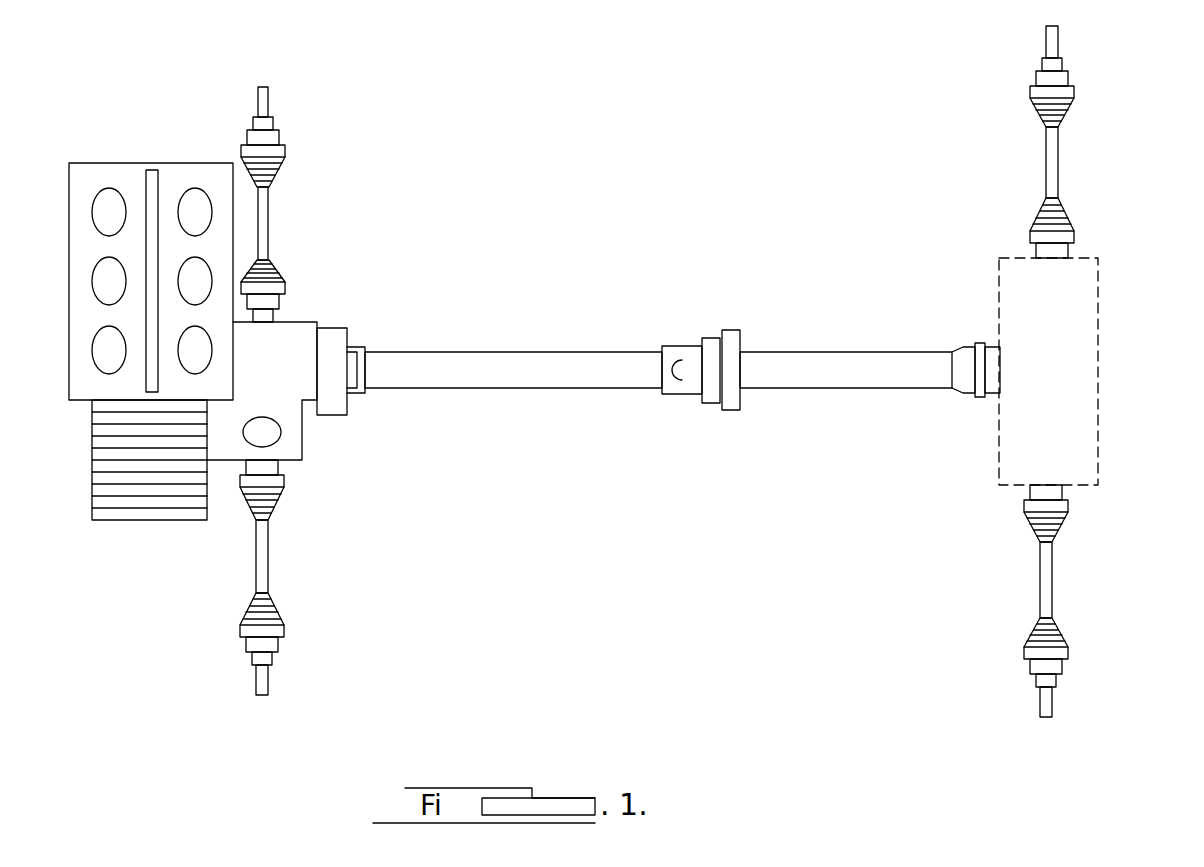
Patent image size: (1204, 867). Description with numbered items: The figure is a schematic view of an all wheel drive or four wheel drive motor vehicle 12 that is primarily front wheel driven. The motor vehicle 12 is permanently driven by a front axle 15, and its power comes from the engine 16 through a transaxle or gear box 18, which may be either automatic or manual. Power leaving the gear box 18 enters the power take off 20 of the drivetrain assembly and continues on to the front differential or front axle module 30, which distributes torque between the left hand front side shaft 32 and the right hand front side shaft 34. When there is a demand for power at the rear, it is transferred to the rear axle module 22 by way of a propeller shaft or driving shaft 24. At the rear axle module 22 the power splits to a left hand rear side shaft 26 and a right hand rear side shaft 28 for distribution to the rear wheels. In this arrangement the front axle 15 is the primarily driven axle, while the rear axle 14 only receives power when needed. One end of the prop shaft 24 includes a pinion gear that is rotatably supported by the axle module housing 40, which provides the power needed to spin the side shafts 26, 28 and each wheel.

The motor vehicle 12 is at (235, 90).
The rear axle 14 is at (1080, 333).
The front axle 15 is at (284, 266).
The engine 16 is at (97, 162).
The transaxle or gear box 18 is at (137, 488).
The power take off 20 is at (293, 337).
The rear axle module 22 is at (1068, 337).
The propeller shaft or driving shaft 24 is at (595, 353).
The left hand rear side shaft 26 is at (1053, 145).
The right hand rear side shaft 28 is at (1048, 565).
The front differential or front axle module 30 is at (272, 437).
The left hand front side shaft 32 is at (265, 198).
The right hand front side shaft 34 is at (263, 550).
The axle module housing 40 is at (1100, 387).